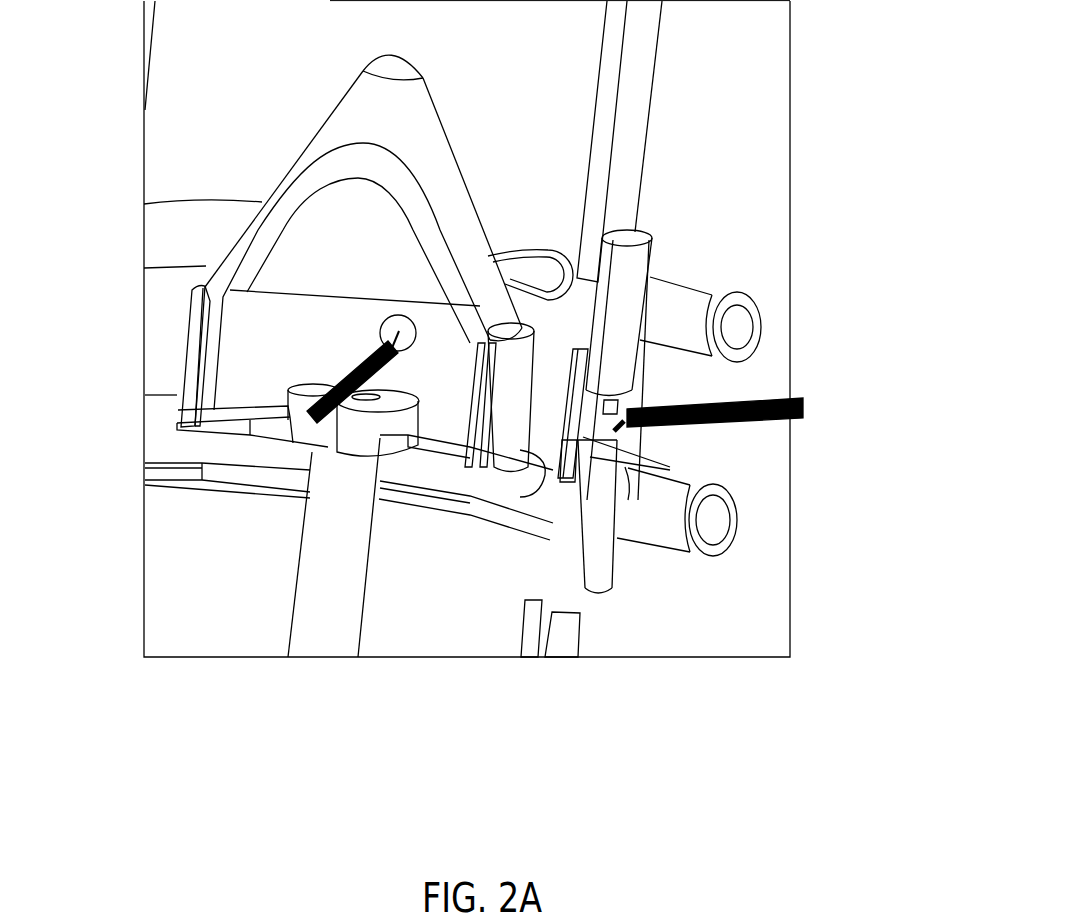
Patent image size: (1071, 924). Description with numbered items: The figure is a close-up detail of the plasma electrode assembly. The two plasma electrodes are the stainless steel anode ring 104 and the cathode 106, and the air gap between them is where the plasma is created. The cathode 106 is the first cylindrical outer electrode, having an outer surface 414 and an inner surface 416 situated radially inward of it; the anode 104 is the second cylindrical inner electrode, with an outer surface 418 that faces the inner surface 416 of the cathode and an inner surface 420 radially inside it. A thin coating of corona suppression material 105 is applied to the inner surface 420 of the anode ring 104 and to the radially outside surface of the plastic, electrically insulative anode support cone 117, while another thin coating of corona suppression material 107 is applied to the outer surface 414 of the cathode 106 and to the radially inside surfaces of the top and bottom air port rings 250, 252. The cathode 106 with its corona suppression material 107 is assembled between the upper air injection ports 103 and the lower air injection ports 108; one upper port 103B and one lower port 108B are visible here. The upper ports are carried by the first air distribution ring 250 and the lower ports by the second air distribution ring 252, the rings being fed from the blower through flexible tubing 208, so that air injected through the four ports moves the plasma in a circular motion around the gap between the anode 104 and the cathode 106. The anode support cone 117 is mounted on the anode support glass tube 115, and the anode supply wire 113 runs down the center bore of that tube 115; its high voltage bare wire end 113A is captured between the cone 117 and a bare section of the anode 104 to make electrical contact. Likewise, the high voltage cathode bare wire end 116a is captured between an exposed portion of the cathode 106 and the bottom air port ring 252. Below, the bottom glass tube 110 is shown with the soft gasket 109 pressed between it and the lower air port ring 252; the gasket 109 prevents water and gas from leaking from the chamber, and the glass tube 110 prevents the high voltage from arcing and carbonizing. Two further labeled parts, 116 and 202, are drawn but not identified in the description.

The anode support cone 117 is at (458, 213).
The upper air injection port 103B is at (525, 263).
The first air distribution ring 250 is at (652, 245).
The upper air injection ports 103 is at (635, 262).
The upper knob 202 is at (690, 292).
The inner surface of first cylindrical outer electrode 416 is at (580, 330).
The cathode 106 is at (605, 398).
The corona suppression material 107 is at (617, 406).
The bar 116 is at (757, 420).
The high voltage cathode bare wire end 116a is at (628, 436).
The outer surface of first cylindrical outer electrode 414 is at (605, 468).
The flexible tubing 208 is at (620, 540).
The second air distribution ring 252 is at (617, 553).
The lower air injection ports 108 is at (615, 552).
The soft gasket 109 is at (600, 557).
The lower air injection port 108B is at (512, 485).
The bottom glass tube 110 is at (553, 643).
The outer surface of second cylindrical inner electrode 418 is at (495, 453).
The anode support glass tube 115 is at (350, 578).
The high voltage anode bare wire end 113A is at (380, 328).
The inner surface of second cylindrical inner electrode 420 is at (200, 323).
The anode supply wire 113 is at (488, 381).
The corona suppression material 105 is at (262, 414).
The anode 104 is at (313, 464).